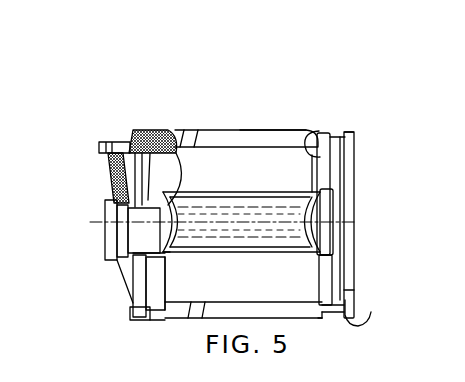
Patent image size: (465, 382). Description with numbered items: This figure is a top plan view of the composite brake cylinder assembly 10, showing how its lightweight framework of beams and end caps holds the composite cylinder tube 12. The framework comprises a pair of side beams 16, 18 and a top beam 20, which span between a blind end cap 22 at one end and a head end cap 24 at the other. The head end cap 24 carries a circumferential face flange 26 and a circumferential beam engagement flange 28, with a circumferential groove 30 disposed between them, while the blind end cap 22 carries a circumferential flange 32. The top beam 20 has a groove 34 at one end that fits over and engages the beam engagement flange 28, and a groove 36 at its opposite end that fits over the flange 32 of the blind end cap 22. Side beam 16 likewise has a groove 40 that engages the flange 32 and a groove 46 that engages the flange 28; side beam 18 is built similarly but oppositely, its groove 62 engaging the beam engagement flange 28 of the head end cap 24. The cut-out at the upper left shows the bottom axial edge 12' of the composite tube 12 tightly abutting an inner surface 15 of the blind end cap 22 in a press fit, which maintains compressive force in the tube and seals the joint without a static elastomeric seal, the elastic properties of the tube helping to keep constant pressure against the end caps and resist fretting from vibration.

The brake cylinder assembly 10 is at (380, 207).
The composite cylinder tube 12 is at (244, 256).
The bottom axial edge 12' is at (158, 180).
The inner surface 15 is at (134, 130).
The side beam 16 is at (160, 322).
The side beam 18 is at (250, 128).
The top beam 20 is at (305, 218).
The blind end cap 22 is at (103, 166).
The head end cap 24 is at (357, 149).
The circumferential face flange 26 is at (350, 131).
The circumferential beam engagement flange 28 is at (313, 130).
The circumferential groove 30 is at (360, 315).
The circumferential flange 32 is at (153, 287).
The groove 34 is at (332, 381).
The groove 36 is at (154, 317).
The groove 40 is at (153, 320).
The groove 46 is at (322, 318).
The groove 62 is at (333, 133).